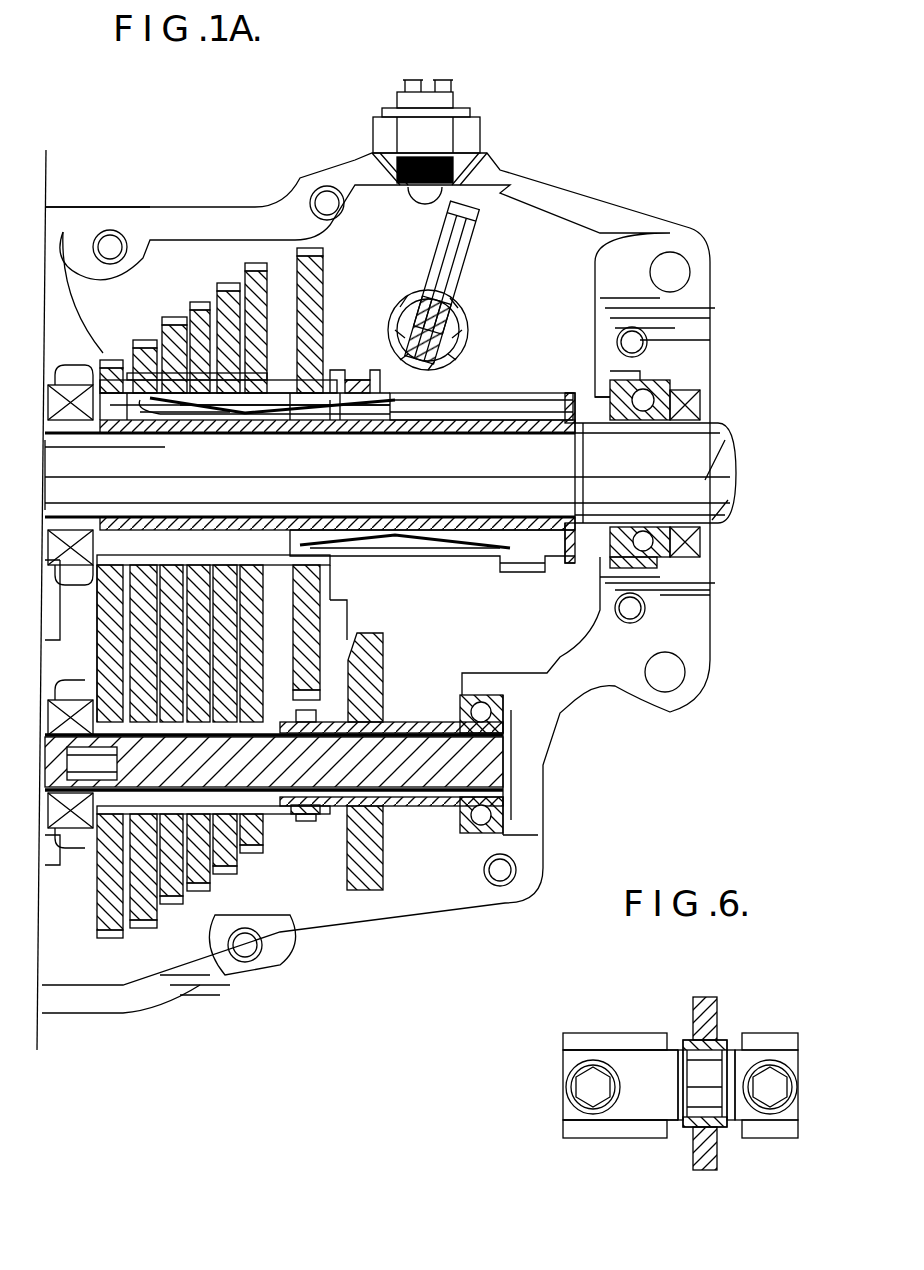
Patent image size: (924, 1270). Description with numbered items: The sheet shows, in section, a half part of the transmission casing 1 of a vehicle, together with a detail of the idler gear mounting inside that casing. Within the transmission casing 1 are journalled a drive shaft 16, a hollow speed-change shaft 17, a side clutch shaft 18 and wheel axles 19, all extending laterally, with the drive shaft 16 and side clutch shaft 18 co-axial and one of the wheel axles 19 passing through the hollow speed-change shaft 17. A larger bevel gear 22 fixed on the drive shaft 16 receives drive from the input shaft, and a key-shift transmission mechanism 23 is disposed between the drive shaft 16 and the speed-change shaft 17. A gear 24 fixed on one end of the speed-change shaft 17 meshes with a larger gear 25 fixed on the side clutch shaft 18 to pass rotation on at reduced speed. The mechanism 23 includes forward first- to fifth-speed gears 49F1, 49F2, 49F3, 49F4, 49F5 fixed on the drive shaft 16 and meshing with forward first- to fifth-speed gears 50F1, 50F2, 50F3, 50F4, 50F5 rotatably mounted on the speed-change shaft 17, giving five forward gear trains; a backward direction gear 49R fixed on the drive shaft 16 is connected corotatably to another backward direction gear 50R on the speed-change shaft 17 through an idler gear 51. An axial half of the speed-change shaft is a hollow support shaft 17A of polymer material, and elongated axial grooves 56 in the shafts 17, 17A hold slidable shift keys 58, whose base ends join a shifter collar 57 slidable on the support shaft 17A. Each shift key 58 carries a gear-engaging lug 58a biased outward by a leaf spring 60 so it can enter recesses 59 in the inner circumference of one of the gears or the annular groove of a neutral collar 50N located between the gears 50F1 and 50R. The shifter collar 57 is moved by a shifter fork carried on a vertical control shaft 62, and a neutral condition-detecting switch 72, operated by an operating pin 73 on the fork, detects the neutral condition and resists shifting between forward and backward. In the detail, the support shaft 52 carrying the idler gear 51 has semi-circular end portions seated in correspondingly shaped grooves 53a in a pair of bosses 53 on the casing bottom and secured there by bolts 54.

In FIG. 1A, the transmission casing 1 is at (150, 990).
In FIG. 1A, the drive shaft 16 is at (375, 750).
In FIG. 1A, the speed-change shaft 17 is at (175, 508).
In FIG. 1A, the hollow support shaft 17A is at (520, 450).
In FIG. 1A, the side clutch shaft 18 is at (75, 660).
In FIG. 1A, the wheel axles 19 is at (470, 445).
In FIG. 1A, the larger bevel gear 22 is at (350, 880).
In FIG. 1A, the key-shift transmission mechanism 23 is at (335, 612).
In FIG. 1A, the gear 24 is at (75, 235).
In FIG. 1A, the larger gear 25 is at (100, 950).
In FIG. 1A, the forward direction first-speed gear 49F1 is at (248, 855).
In FIG. 1A, the forward direction second-speed gear 49F2 is at (222, 893).
In FIG. 1A, the forward direction third-speed gear 49F3 is at (195, 905).
In FIG. 1A, the forward direction fourth-speed gear 49F4 is at (143, 928).
In FIG. 1A, the forward direction fifth-speed gear 49F5 is at (110, 940).
In FIG. 1A, the backward direction gear 49R is at (300, 822).
In FIG. 1A, the forward direction first-speed gear 50F1 is at (228, 280).
In FIG. 1A, the forward direction second-speed gear 50F2 is at (200, 300).
In FIG. 1A, the forward direction third-speed gear 50F3 is at (175, 315).
In FIG. 1A, the forward direction fourth-speed gear 50F4 is at (145, 338).
In FIG. 1A, the forward direction fifth-speed gear 50F5 is at (118, 358).
In FIG. 1A, the neutral collar 50N is at (310, 300).
In FIG. 1A, the backward direction gear 50R is at (258, 260).
In FIG. 1A, the elongated axial grooves 56 is at (345, 420).
In FIG. 1A, the shifter collar 57 is at (355, 340).
In FIG. 1A, the shift keys 58 is at (245, 413).
In FIG. 1A, the gear-engaging lug 58a is at (170, 420).
In FIG. 1A, the recesses 59 is at (140, 420).
In FIG. 1A, the leaf spring 60 is at (310, 420).
In FIG. 1A, the control shaft 62 is at (445, 325).
In FIG. 1A, the neutral condition-detecting switch 72 is at (440, 140).
In FIG. 1A, the operating pin 73 is at (460, 260).
In FIG. 6, the idler gear 51 is at (705, 1165).
In FIG. 6, the support shaft 52 is at (680, 1130).
In FIG. 6, the bosses 53 is at (780, 1040).
In FIG. 6, the grooves 53a is at (585, 1045).
In FIG. 6, the bolts 54 is at (588, 1087).